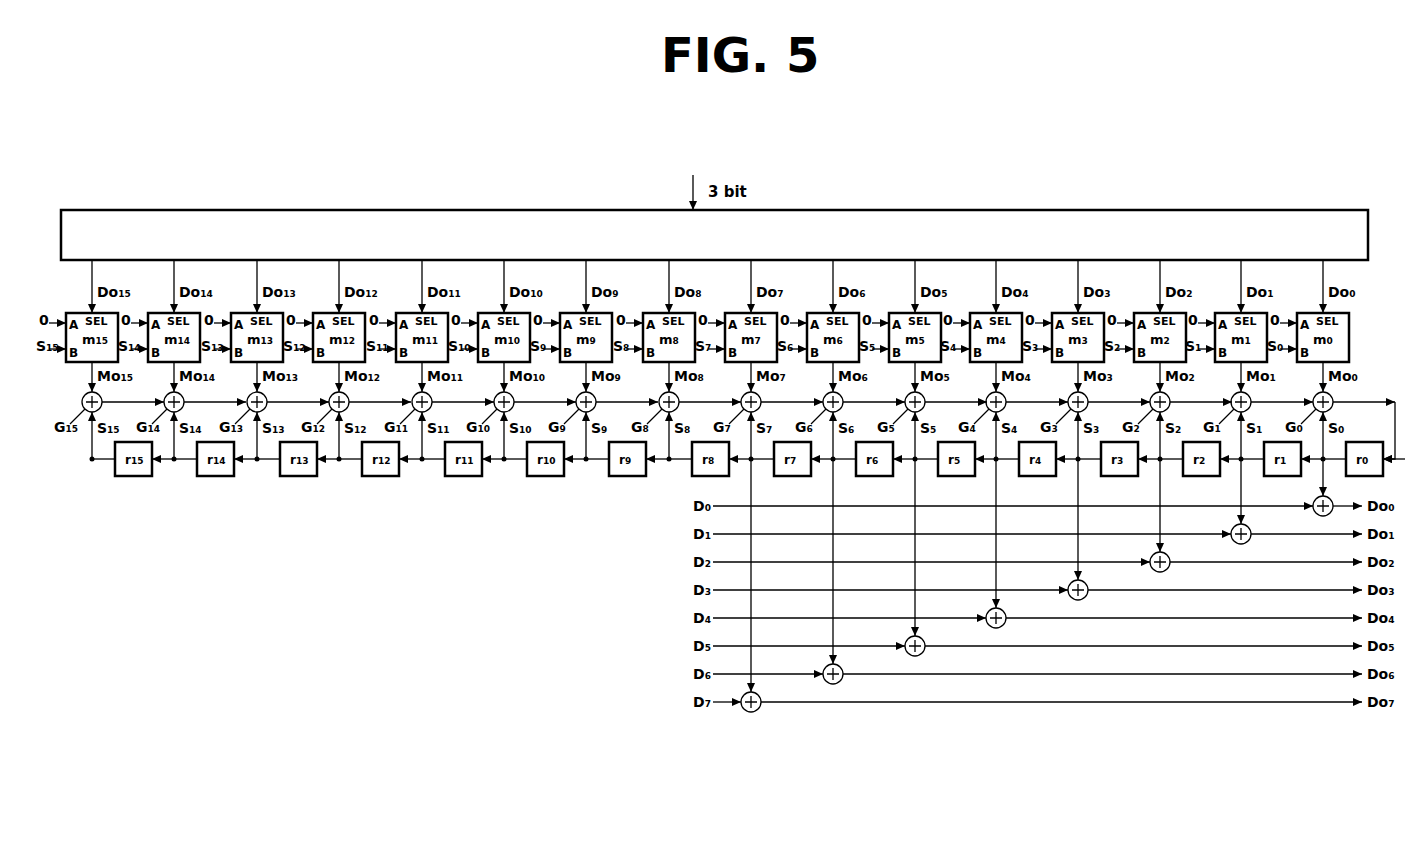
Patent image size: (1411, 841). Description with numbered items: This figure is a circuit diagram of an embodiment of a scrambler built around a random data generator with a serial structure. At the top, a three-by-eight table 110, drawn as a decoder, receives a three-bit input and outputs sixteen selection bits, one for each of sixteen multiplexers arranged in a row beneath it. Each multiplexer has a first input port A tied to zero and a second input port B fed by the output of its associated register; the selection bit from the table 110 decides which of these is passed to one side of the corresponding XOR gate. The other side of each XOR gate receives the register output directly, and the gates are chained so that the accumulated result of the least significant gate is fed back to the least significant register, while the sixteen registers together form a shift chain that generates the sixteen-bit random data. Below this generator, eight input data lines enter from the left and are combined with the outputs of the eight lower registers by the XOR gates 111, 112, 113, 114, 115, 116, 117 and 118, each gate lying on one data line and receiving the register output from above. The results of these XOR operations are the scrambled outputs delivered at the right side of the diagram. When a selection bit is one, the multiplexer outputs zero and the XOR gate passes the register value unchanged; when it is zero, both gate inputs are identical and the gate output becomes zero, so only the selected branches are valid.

The 3×8 table 110 is at (943, 209).
The XOR gate 111 is at (1330, 499).
The XOR gate 112 is at (1248, 527).
The XOR gate 113 is at (1167, 555).
The XOR gate 114 is at (1085, 583).
The XOR gate 115 is at (1003, 611).
The XOR gate 116 is at (922, 639).
The XOR gate 117 is at (840, 667).
The XOR gate 118 is at (758, 695).